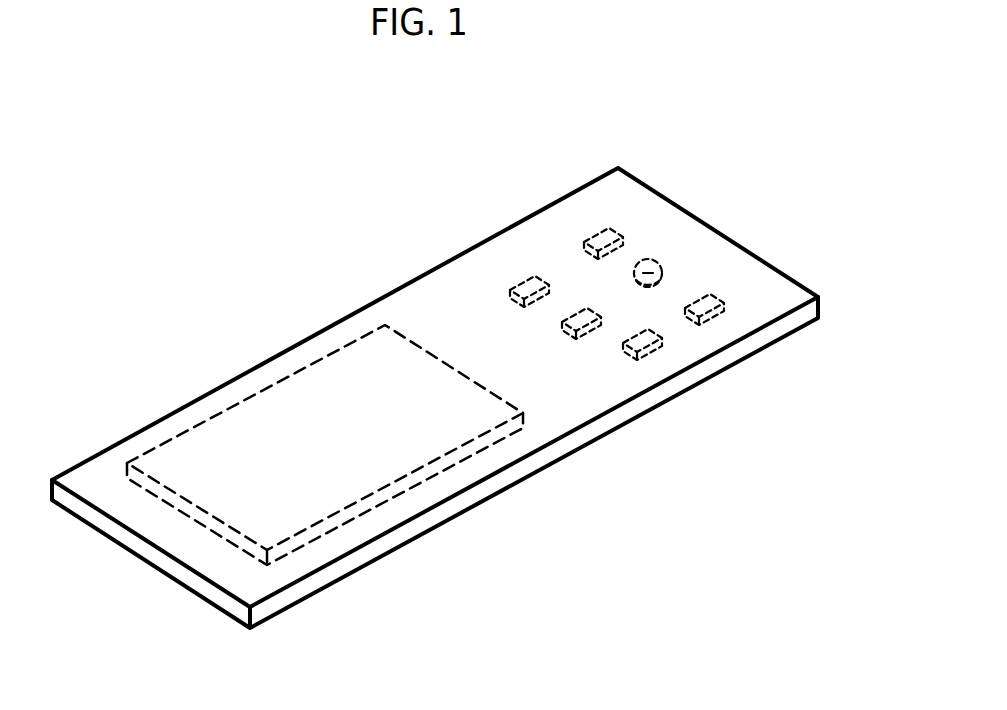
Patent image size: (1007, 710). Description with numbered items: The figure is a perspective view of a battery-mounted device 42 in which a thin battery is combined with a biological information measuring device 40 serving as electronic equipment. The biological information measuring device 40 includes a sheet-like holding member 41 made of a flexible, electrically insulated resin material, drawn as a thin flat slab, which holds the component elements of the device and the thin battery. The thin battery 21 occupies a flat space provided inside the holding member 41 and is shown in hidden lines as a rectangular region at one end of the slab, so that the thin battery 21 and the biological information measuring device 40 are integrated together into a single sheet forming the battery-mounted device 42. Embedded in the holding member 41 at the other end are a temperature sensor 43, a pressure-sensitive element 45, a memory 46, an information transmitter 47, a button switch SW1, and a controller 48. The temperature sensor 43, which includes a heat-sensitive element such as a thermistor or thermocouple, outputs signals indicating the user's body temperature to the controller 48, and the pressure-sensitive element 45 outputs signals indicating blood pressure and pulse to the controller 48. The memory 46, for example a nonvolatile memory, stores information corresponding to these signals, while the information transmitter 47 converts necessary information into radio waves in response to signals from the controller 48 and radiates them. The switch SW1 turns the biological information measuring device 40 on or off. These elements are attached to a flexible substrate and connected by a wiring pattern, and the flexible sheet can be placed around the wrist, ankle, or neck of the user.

The biological information measuring device 40 is at (457, 356).
The holding member 41 is at (168, 415).
The battery-mounted device 42 is at (325, 324).
The thin battery 21 is at (347, 385).
The temperature sensor 43 is at (515, 300).
The pressure-sensitive element 45 is at (565, 333).
The memory 46 is at (644, 355).
The information transmitter 47 is at (650, 260).
The controller 48 is at (612, 230).
The button switch SW1 is at (714, 296).